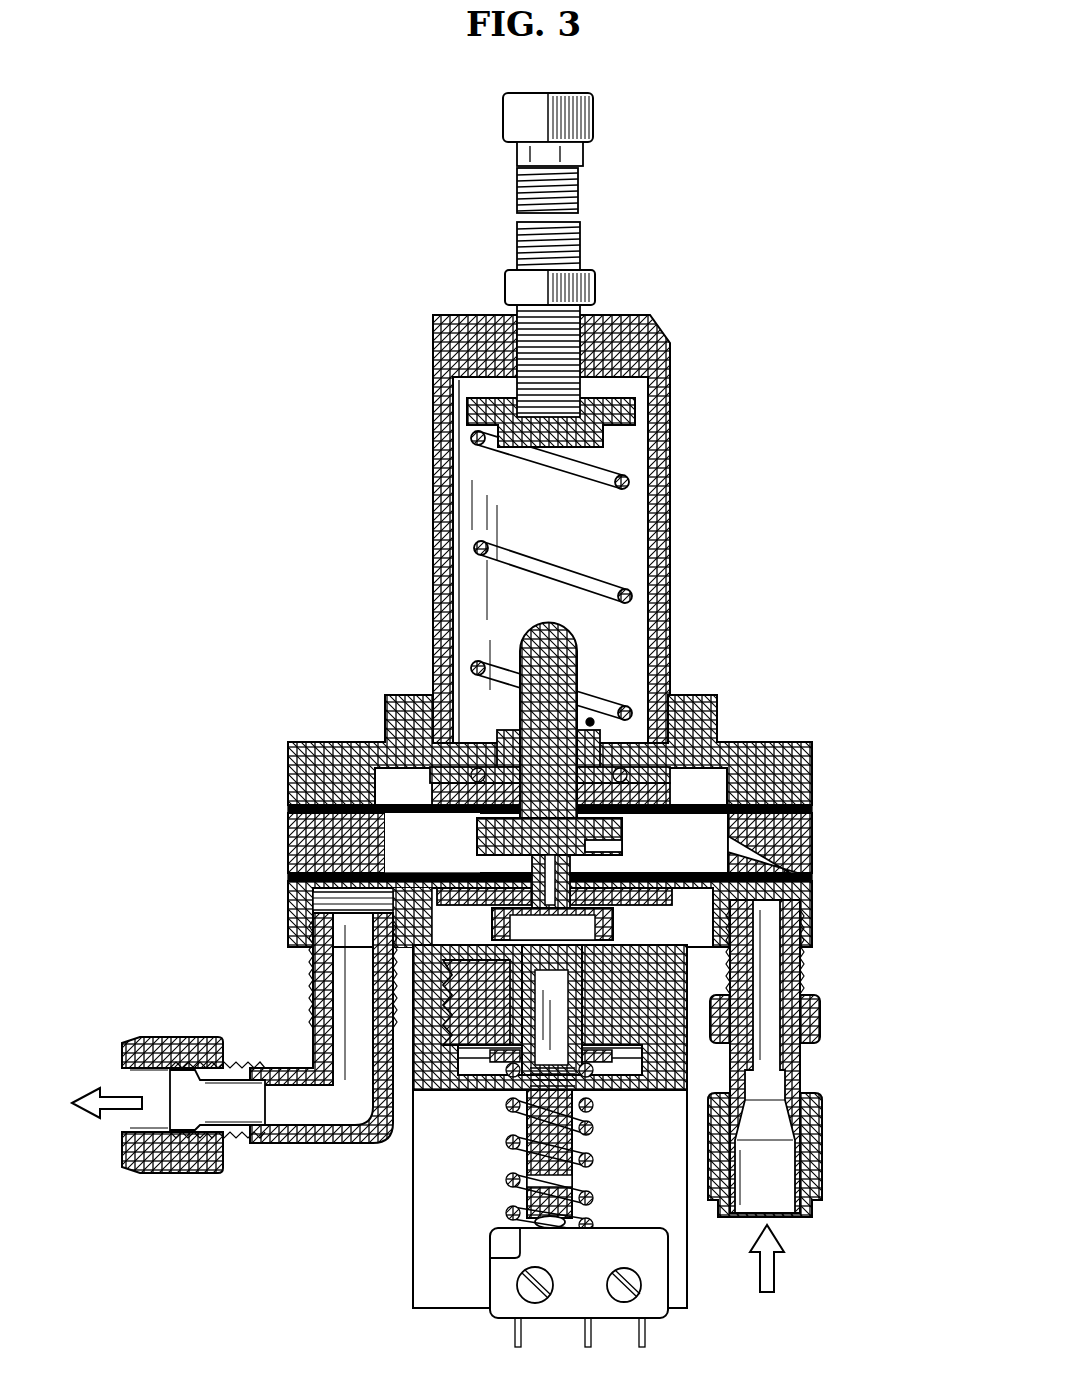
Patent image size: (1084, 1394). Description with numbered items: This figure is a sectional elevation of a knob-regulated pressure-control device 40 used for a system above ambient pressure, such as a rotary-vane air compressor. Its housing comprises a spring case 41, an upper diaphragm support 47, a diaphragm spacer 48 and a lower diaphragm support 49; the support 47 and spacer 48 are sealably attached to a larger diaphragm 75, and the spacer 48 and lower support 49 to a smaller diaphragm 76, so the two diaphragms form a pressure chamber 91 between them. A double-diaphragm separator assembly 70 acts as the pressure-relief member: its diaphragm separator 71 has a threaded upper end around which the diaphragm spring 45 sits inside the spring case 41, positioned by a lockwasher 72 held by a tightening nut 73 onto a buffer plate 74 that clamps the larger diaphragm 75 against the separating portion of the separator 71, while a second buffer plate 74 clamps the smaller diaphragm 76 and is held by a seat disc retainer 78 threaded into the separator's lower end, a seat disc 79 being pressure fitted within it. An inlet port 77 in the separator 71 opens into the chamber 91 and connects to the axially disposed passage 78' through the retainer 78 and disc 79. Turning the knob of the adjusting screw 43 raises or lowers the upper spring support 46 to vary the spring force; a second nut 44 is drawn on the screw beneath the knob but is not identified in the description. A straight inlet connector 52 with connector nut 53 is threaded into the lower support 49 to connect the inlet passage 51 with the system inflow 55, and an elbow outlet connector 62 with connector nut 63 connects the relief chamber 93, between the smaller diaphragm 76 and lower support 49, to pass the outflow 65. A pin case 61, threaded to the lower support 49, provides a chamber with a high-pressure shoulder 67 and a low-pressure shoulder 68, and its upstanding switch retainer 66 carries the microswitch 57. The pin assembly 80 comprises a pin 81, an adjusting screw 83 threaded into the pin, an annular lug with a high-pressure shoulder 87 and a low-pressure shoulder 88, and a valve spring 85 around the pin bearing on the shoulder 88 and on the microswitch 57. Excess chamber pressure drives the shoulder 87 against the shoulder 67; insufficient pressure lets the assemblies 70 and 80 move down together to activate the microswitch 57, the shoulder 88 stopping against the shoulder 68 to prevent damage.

The pressure-control device 40 is at (725, 662).
The spring case 41 is at (433, 480).
The adjusting screw 43 is at (578, 210).
The lock nut 44 is at (507, 286).
The diaphragm spring 45 is at (610, 578).
The upper spring support 46 is at (482, 400).
The upper diaphragm support 47 is at (800, 770).
The diaphragm spacer 48 is at (812, 838).
The lower diaphragm support 49 is at (800, 905).
The inlet passage 51 is at (770, 865).
The straight inlet connector 52 is at (800, 975).
The connector nut 53 is at (822, 1112).
The inflow 55 is at (773, 1270).
The microswitch 57 is at (497, 1312).
The pin case 61 is at (472, 1097).
The elbow outlet connector 62 is at (340, 1143).
The connector nut 63 is at (185, 1173).
The outflow 65 is at (106, 1090).
The switch retainer 66 is at (690, 1265).
The high-pressure shoulder 67 is at (485, 1058).
The low-pressure shoulder 68 is at (627, 1062).
The double-diaphragm separator assembly 70 is at (500, 727).
The diaphragm separator 71 is at (566, 633).
The lockwasher 72 is at (598, 766).
The tightening nut 73 is at (590, 722).
The buffer plate 74 is at (668, 793).
The larger diaphragm 75 is at (812, 809).
The smaller diaphragm 76 is at (812, 877).
The inlet port 77 is at (622, 846).
The seat disc retainer 78 is at (389, 935).
The axially disposed passage 78' is at (500, 876).
The seat disc 79 is at (605, 932).
The pin assembly 80 is at (460, 1066).
The pin 81 is at (523, 1118).
The adjusting screw 83 is at (575, 1172).
The valve spring 85 is at (512, 1180).
The high-pressure shoulder 87 is at (605, 1032).
The low-pressure shoulder 88 is at (600, 1073).
The pressure chamber 91 is at (441, 840).
The relief chamber 93 is at (320, 898).